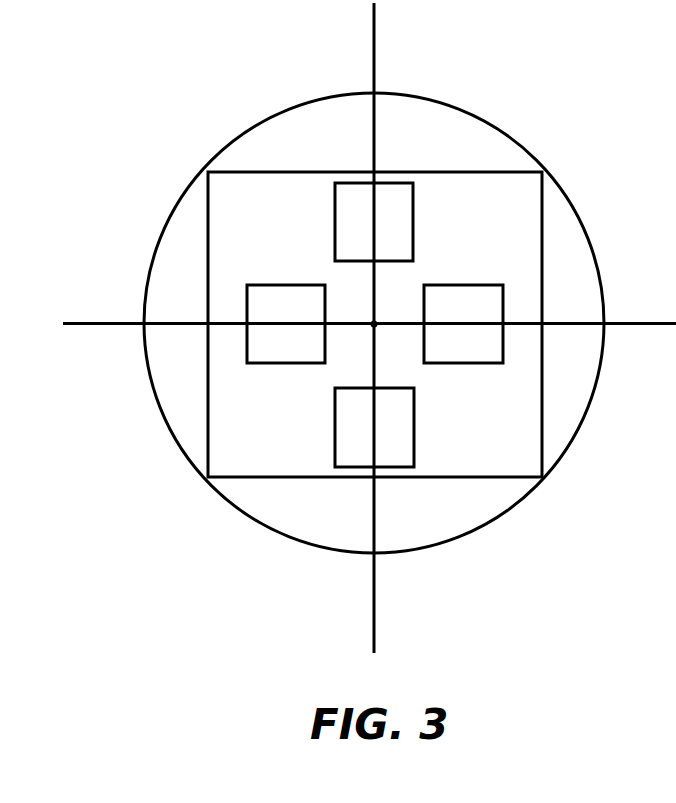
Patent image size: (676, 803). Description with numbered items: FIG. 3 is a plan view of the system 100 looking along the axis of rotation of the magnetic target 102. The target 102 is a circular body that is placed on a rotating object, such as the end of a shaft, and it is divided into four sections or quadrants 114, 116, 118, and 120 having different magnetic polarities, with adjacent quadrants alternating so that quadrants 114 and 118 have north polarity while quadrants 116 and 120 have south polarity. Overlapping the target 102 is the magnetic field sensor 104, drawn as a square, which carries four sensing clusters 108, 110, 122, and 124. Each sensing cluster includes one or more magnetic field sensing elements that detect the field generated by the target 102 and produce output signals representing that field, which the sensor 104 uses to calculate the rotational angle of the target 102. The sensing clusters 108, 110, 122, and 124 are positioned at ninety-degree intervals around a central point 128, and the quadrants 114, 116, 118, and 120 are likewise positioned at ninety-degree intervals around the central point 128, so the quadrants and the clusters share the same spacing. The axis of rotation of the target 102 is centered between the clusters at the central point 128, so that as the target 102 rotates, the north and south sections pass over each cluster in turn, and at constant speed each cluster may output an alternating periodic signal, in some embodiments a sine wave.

The system 100 is at (217, 97).
The magnetic target 102 is at (470, 112).
The magnetic field sensor 104 is at (263, 212).
The sensing cluster 108 is at (394, 234).
The sensing cluster 110 is at (394, 440).
The quadrant 114 is at (466, 152).
The quadrant 116 is at (466, 524).
The quadrant 118 is at (199, 374).
The quadrant 120 is at (332, 152).
The sensing cluster 122 is at (483, 338).
The sensing cluster 124 is at (306, 336).
The central point 128 is at (375, 327).